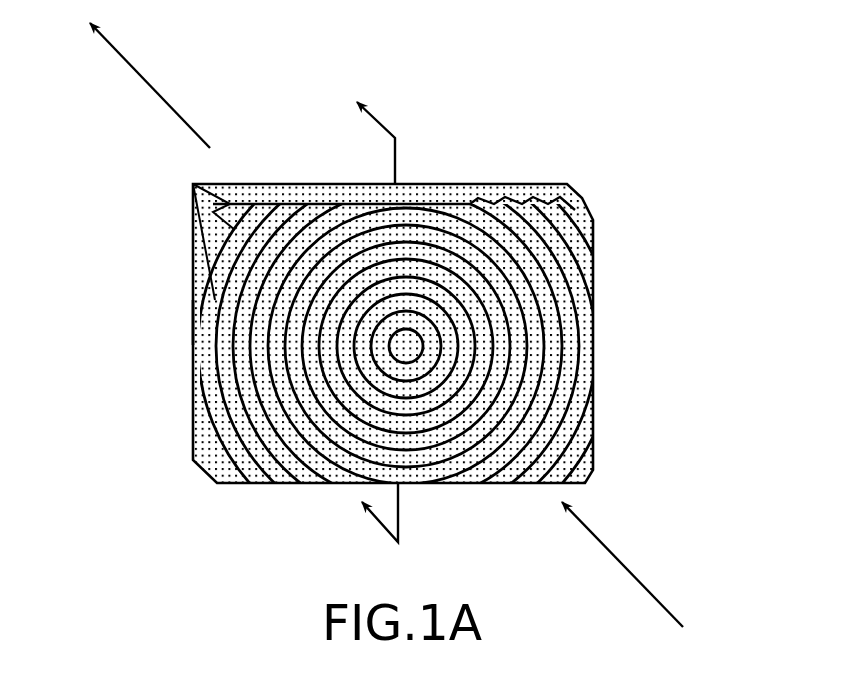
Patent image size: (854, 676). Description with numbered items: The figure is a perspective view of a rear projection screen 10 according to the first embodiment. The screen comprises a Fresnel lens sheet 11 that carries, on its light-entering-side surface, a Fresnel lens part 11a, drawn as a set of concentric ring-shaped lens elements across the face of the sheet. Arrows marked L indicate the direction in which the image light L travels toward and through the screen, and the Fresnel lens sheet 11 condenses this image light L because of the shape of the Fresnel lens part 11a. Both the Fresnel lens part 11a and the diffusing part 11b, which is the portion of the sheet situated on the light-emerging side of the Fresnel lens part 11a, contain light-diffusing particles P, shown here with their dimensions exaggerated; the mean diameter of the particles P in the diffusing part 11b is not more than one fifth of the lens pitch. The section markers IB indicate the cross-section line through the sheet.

The rear projection screen 10 is at (451, 321).
The Fresnel lens sheet 11 is at (451, 329).
The Fresnel lens part 11a is at (593, 287).
The diffusing part 11b is at (567, 188).
The light-diffusing particles P is at (195, 322).
The image light L is at (130, 63).
The section line IB- IB is at (376, 317).